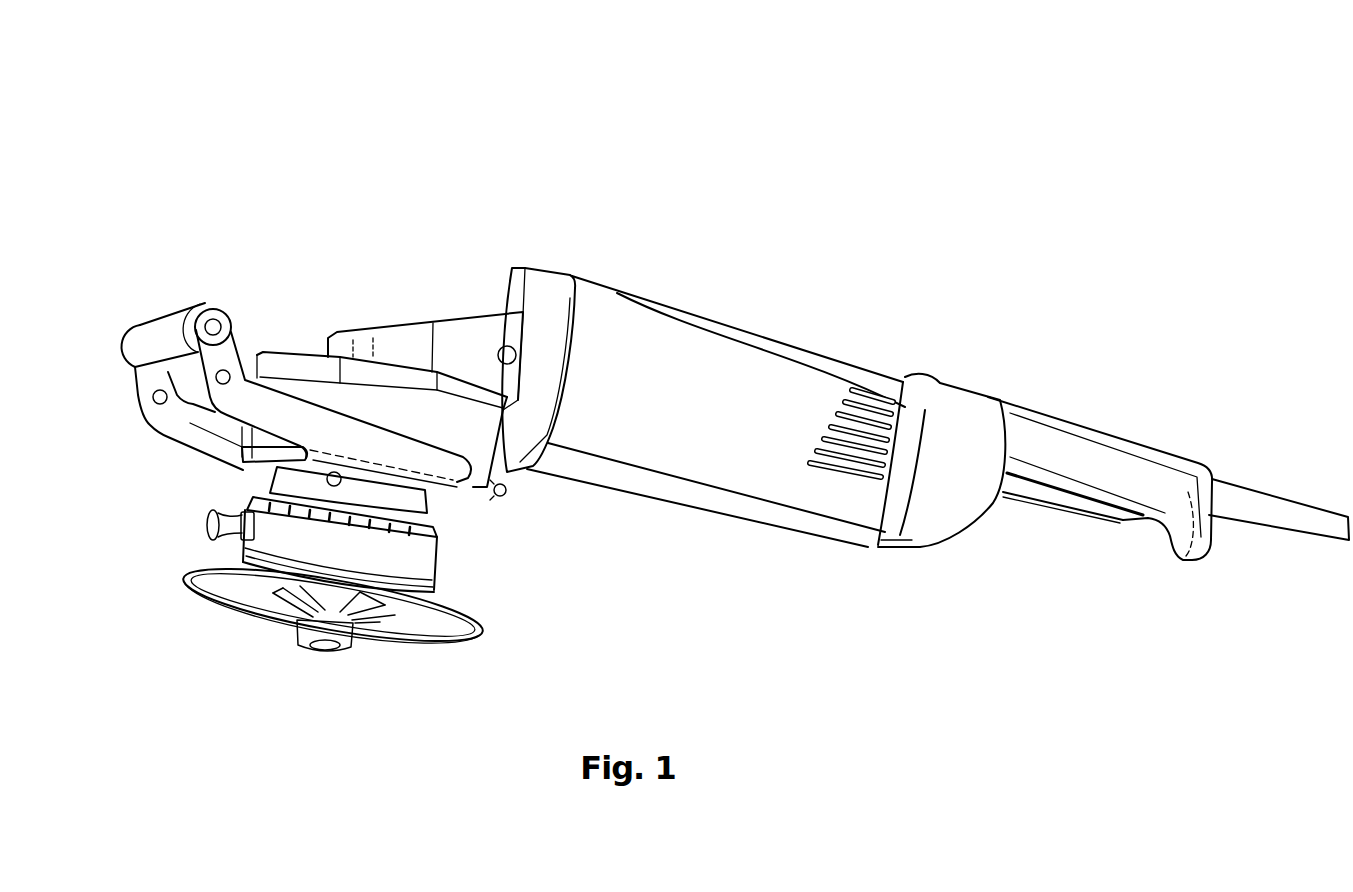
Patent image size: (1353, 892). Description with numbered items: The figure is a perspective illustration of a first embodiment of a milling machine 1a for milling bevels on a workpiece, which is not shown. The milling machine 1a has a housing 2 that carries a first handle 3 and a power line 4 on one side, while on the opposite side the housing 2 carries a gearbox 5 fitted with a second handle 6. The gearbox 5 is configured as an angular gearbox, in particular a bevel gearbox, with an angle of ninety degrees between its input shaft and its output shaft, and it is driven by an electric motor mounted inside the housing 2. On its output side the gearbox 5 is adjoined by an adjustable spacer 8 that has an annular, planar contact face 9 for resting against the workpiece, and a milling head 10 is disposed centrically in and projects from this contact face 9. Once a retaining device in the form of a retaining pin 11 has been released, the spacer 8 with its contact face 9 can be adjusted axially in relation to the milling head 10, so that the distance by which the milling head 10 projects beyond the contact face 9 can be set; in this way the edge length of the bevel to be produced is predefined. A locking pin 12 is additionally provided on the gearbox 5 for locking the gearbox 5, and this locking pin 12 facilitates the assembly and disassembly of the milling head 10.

The milling machine 1a is at (1234, 150).
The housing 2 is at (733, 473).
The first handle 3 is at (1117, 437).
The power line 4 is at (1277, 527).
The gearbox 5 is at (379, 307).
The second handle 6 is at (143, 334).
The adjustable spacer 8 is at (453, 568).
The contact face 9 is at (180, 577).
The milling head 10 is at (280, 620).
The retaining pin 11 is at (205, 517).
The locking pin 12 is at (508, 498).